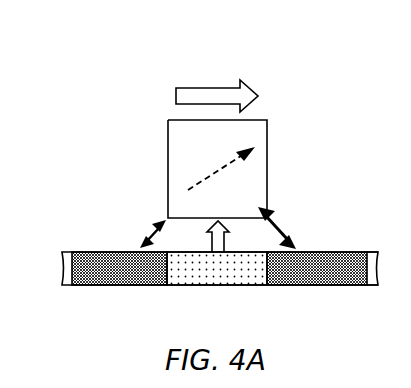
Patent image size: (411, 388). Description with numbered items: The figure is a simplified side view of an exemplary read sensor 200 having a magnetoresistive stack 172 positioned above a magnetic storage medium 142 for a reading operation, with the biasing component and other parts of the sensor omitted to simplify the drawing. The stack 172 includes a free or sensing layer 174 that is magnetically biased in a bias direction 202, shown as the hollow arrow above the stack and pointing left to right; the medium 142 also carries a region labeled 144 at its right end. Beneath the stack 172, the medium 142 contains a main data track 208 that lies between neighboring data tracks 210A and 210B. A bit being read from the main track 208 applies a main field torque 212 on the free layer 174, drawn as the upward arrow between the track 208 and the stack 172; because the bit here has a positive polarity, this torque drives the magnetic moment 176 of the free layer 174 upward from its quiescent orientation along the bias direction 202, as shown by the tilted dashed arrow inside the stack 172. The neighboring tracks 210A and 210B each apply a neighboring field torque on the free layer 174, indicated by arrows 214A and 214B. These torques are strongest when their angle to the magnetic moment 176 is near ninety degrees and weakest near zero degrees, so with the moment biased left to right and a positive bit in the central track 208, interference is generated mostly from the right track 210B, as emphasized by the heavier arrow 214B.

The read sensor 200 is at (103, 45).
The bias direction 202 is at (217, 88).
The magnetoresistive stack 172 is at (178, 137).
The free layer 174 is at (260, 132).
The magnetic moment 176 is at (212, 172).
The neighboring field torque 214A is at (147, 238).
The neighboring field torque 214B is at (280, 230).
The magnetic storage medium 142 is at (66, 270).
The second substrate end 144 is at (389, 268).
The neighboring data track 210A is at (118, 278).
The neighboring data track 210B is at (312, 285).
The main data track 208 is at (233, 280).
The main field torque 212 is at (207, 243).